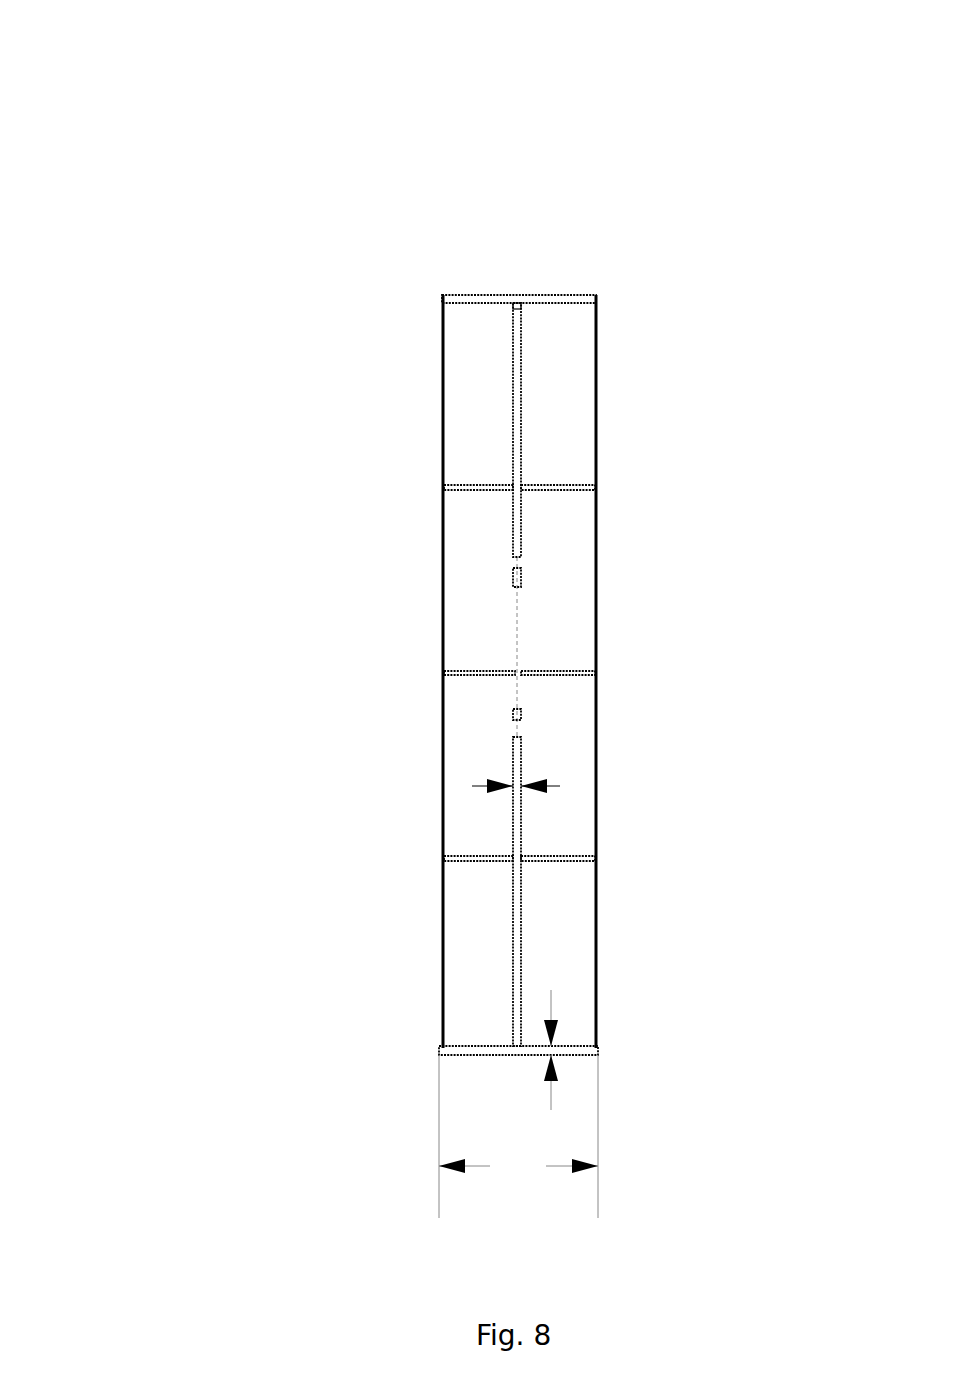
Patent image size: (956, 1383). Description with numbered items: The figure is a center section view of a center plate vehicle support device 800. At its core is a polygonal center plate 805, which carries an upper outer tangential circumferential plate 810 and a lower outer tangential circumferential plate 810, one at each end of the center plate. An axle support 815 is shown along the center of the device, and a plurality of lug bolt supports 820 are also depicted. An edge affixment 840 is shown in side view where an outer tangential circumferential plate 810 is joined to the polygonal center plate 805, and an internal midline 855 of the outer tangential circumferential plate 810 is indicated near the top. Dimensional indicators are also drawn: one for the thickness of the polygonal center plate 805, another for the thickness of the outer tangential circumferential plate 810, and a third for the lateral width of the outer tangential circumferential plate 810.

The center plate vehicle support device 800 is at (170, 68).
The polygonal center plate 805 is at (517, 353).
The outer tangential circumferential plate 810 is at (520, 293).
The axle support 815 is at (517, 654).
The second conductive strip 820 is at (517, 727).
The edge affixment 840 is at (515, 1045).
The internal midline 855 is at (526, 305).